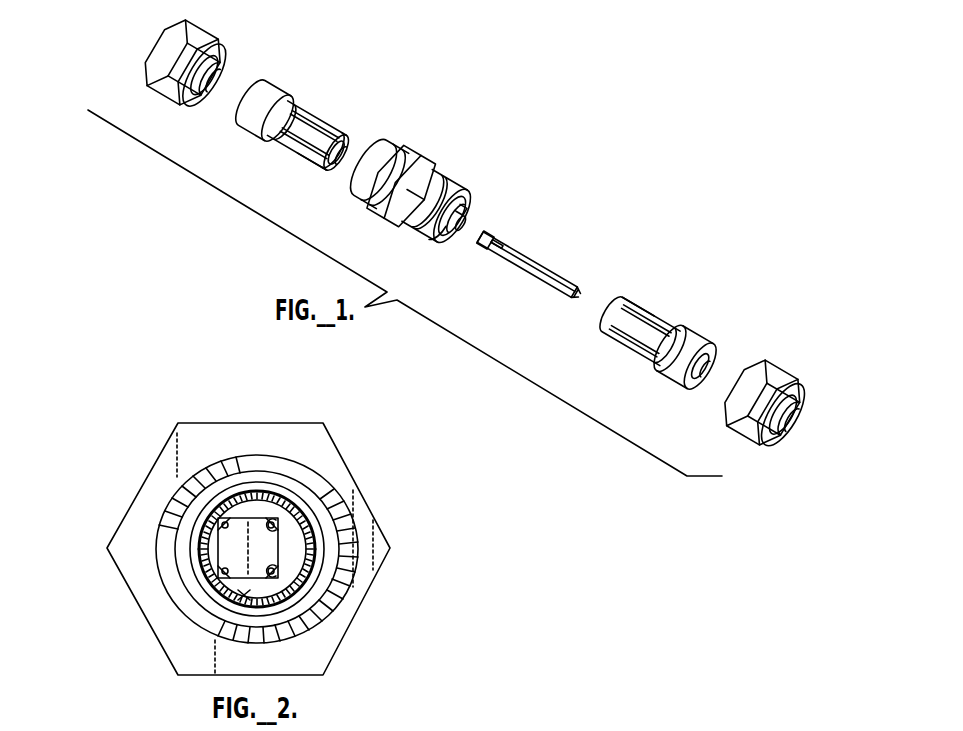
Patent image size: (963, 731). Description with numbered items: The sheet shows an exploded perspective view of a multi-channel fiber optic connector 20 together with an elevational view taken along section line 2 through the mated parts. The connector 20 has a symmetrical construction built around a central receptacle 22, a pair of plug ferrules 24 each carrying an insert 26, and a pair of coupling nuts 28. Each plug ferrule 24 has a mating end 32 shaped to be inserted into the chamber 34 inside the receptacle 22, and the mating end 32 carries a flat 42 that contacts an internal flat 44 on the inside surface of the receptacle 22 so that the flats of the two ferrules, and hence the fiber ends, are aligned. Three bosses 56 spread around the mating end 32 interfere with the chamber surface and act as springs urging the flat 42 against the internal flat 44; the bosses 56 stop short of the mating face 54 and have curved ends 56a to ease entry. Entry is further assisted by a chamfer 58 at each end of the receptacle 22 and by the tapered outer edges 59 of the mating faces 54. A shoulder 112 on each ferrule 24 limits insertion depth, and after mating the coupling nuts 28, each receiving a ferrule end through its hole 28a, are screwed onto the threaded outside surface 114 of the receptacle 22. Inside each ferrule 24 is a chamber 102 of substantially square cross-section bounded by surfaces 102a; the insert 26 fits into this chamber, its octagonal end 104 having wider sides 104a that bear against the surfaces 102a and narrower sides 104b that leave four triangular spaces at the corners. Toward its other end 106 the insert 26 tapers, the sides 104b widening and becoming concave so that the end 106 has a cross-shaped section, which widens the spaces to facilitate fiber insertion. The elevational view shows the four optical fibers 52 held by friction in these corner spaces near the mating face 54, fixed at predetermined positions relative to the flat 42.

In FIG. 1, the multi-channel fiber optic connector 20 is at (576, 27).
In FIG. 2, the multi-channel fiber optic connector 20 is at (82, 406).
In FIG. 1, the receptacle 22 is at (441, 178).
In FIG. 2, the receptacle 22 is at (381, 527).
In FIG. 1, the plug ferrule 24 is at (273, 89).
In FIG. 2, the plug ferrule 24 is at (205, 543).
In FIG. 1, the insert 26 is at (342, 147).
In FIG. 2, the insert 26 is at (243, 548).
In FIG. 1, the coupling nut 28 is at (179, 24).
In FIG. 1, the hole 28a is at (779, 434).
In FIG. 1, the mating end 32 is at (306, 162).
In FIG. 1, the chamber 34 is at (433, 217).
In FIG. 1, the flat 42 is at (305, 122).
In FIG. 2, the flat 42 is at (280, 506).
In FIG. 1, the internal flat 44 is at (455, 204).
In FIG. 2, the internal flat 44 is at (273, 490).
In FIG. 2, the optical fibers 52 is at (276, 572).
In FIG. 1, the mating face 54 is at (325, 165).
In FIG. 2, the mating face 54 is at (259, 593).
In FIG. 1, the bosses 56 is at (312, 120).
In FIG. 2, the bosses 56 is at (200, 520).
In FIG. 1, the curved ends 56a is at (300, 152).
In FIG. 1, the chamfer 58 is at (452, 240).
In FIG. 2, the chamfer 58 is at (217, 602).
In FIG. 1, the outer edges 59 is at (318, 183).
In FIG. 2, the outer edges 59 is at (203, 578).
In FIG. 1, the chamber 102 is at (690, 371).
In FIG. 1, the surfaces 102a is at (686, 380).
In FIG. 1, the end 104 is at (504, 238).
In FIG. 1, the sides 104a is at (483, 257).
In FIG. 1, the sides 104b is at (498, 241).
In FIG. 1, the end 106 is at (574, 293).
In FIG. 1, the shoulder 112 is at (278, 140).
In FIG. 1, the threaded outside surface 114 is at (398, 156).
In FIG. 1, the section line 2— 2 is at (540, 182).